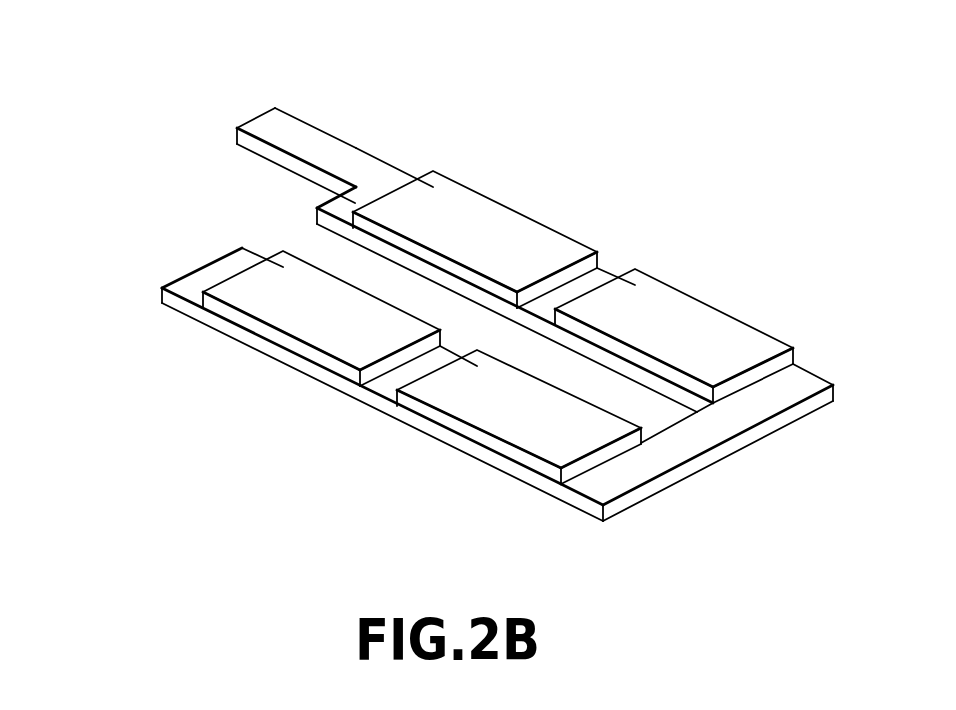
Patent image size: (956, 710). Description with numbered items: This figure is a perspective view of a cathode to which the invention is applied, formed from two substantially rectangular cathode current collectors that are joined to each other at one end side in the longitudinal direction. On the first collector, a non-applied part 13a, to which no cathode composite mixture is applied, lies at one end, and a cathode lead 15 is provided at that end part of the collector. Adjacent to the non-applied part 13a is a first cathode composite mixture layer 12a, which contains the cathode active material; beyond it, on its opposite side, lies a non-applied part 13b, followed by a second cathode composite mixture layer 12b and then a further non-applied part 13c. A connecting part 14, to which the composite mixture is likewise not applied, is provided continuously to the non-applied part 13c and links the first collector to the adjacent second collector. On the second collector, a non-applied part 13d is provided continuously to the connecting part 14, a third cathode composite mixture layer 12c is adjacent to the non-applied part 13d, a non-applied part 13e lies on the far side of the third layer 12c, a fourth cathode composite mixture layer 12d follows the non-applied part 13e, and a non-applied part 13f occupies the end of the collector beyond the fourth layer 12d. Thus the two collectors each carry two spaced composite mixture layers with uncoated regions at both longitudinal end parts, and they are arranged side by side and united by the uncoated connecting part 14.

The first cathode composite mixture layer 12a is at (487, 222).
The second cathode composite mixture layer 12b is at (708, 330).
The third cathode composite mixture layer 12c is at (470, 420).
The fourth cathode composite mixture layer 12d is at (268, 312).
The non-applied part 13a is at (394, 181).
The non-applied part 13b is at (608, 277).
The non-applied part 13c is at (807, 383).
The non-applied part 13d is at (590, 492).
The non-applied part 13e is at (374, 389).
The non-applied part 13f is at (203, 273).
The connecting part 14 is at (703, 443).
The cathode lead 15 is at (282, 124).